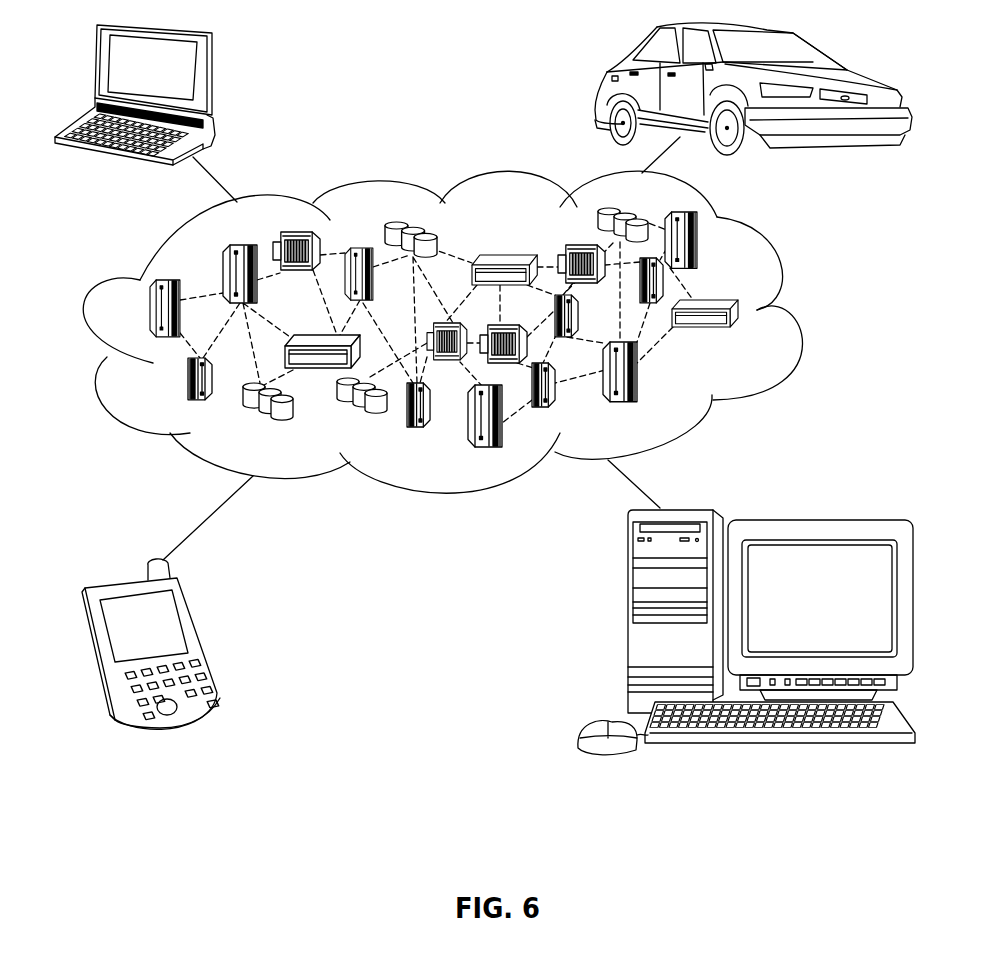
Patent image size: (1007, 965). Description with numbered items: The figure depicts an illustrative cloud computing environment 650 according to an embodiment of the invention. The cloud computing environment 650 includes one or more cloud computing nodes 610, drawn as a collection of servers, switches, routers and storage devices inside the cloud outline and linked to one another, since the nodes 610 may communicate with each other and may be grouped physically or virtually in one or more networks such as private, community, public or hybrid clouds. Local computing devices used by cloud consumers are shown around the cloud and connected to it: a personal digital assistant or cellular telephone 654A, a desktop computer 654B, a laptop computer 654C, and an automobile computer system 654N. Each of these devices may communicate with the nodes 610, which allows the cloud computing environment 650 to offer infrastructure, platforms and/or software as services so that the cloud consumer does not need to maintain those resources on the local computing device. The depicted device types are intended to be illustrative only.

The laptop computer 654C is at (212, 75).
The automobile computer system 654N is at (597, 80).
The personal digital assistant (PDA) or cellular telephone 654A is at (197, 637).
The desktop computer 654B is at (628, 620).
The cloud computing environment 650 is at (783, 273).
The cloud computing nodes 610 is at (760, 335).